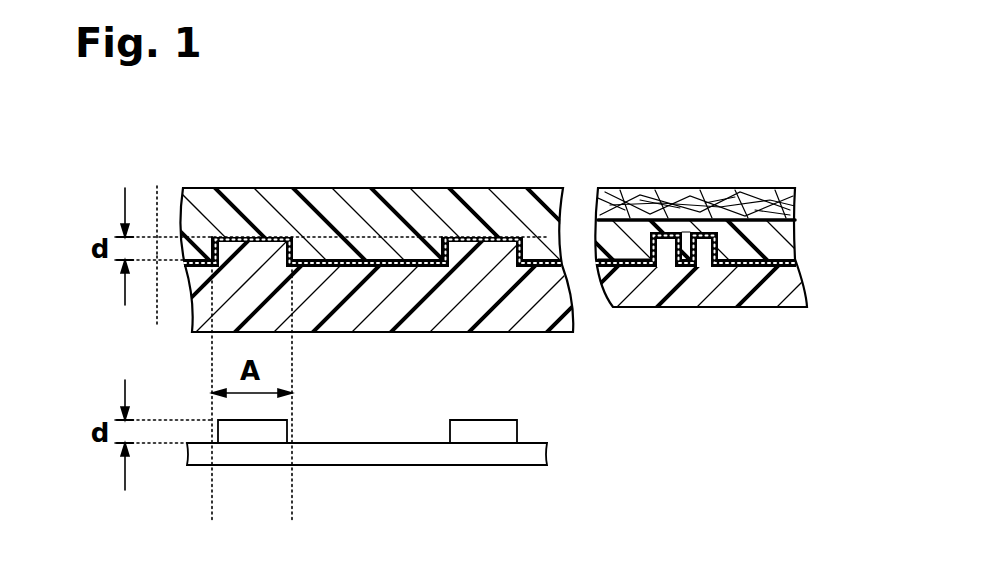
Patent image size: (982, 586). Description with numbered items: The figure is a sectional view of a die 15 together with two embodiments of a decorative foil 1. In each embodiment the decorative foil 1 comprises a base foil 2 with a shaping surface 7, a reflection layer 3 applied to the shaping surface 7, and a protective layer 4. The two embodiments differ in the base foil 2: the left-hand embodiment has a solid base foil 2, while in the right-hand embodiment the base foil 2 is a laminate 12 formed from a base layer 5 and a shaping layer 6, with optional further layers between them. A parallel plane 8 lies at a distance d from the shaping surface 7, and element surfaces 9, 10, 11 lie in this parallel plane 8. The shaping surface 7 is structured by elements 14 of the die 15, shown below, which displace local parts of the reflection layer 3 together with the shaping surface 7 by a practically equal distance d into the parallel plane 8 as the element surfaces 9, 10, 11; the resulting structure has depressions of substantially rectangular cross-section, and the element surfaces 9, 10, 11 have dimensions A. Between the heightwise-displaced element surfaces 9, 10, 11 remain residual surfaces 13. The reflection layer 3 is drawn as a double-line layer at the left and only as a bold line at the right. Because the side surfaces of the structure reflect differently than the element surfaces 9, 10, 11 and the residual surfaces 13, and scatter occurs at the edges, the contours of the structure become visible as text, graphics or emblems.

The decorative foil 1 is at (88, 188).
The base foil 2 is at (357, 193).
The reflection layer 3 is at (550, 189).
The protective layer 4 is at (645, 290).
The base layer 5 is at (608, 252).
The shaping layer 6 is at (768, 240).
The shaping surface 7 is at (157, 306).
The parallel plane 8 is at (157, 206).
The element surface 9 is at (232, 231).
The element surface 10 is at (467, 232).
The element surface 11 is at (688, 242).
The laminate 12 is at (808, 188).
The residual surfaces 13 is at (385, 267).
The elements 14 is at (257, 255).
The die 15 is at (515, 453).